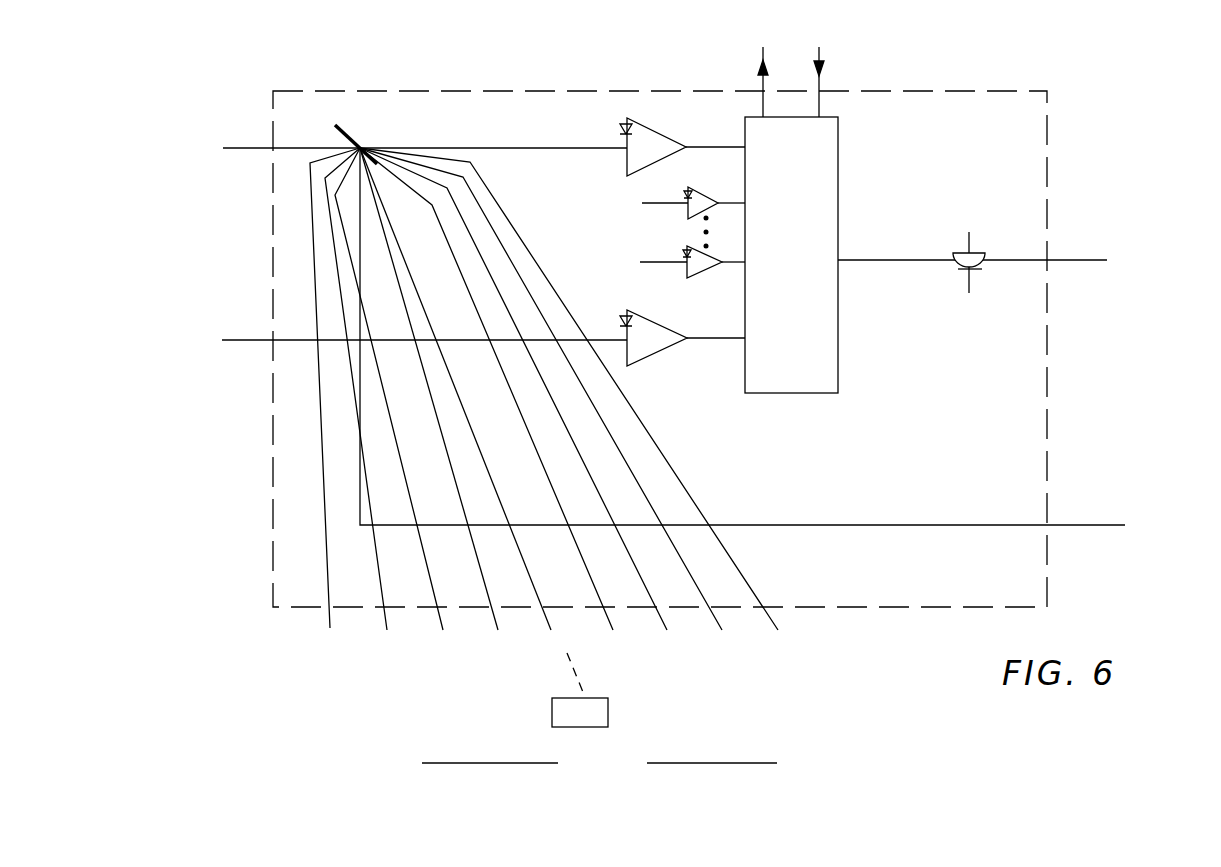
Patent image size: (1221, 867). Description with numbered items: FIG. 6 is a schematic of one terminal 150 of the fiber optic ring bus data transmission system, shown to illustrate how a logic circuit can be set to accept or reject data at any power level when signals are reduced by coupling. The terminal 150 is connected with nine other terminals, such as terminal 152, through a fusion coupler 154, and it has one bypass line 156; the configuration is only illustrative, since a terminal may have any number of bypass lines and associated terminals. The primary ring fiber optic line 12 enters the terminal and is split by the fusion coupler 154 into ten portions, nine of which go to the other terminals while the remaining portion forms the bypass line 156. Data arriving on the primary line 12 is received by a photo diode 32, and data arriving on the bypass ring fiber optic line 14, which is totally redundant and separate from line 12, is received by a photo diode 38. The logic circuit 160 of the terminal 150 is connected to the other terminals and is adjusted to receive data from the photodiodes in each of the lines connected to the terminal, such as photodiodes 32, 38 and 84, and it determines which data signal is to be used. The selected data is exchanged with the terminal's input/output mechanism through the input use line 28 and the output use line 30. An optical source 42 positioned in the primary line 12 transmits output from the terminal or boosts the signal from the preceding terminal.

The fiber optic line 12 is at (246, 149).
The fiber optic line 14 is at (245, 340).
The input use line 28 is at (763, 108).
The output use line 30 is at (819, 108).
The photo diode 32 is at (650, 124).
The photo diode 38 is at (661, 352).
The optical source 42 is at (983, 237).
The photodiode 84 is at (691, 278).
The terminal 150 is at (236, 518).
The terminal 152 is at (608, 709).
The fusion coupler 154 is at (347, 135).
The bypass line 156 is at (853, 525).
The logic circuit 160 is at (969, 255).